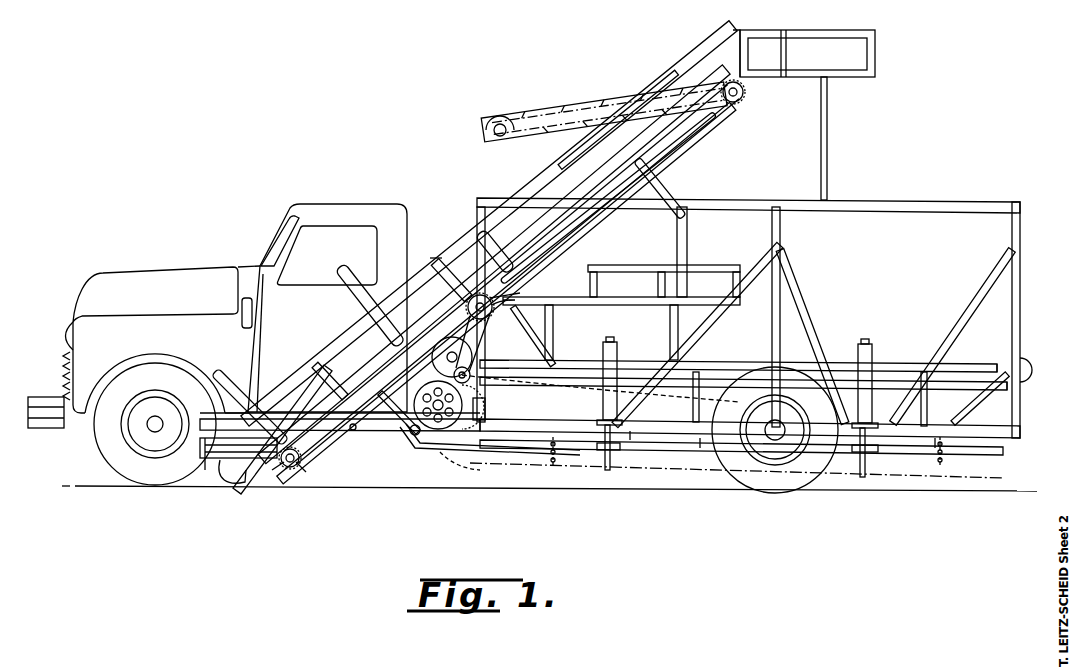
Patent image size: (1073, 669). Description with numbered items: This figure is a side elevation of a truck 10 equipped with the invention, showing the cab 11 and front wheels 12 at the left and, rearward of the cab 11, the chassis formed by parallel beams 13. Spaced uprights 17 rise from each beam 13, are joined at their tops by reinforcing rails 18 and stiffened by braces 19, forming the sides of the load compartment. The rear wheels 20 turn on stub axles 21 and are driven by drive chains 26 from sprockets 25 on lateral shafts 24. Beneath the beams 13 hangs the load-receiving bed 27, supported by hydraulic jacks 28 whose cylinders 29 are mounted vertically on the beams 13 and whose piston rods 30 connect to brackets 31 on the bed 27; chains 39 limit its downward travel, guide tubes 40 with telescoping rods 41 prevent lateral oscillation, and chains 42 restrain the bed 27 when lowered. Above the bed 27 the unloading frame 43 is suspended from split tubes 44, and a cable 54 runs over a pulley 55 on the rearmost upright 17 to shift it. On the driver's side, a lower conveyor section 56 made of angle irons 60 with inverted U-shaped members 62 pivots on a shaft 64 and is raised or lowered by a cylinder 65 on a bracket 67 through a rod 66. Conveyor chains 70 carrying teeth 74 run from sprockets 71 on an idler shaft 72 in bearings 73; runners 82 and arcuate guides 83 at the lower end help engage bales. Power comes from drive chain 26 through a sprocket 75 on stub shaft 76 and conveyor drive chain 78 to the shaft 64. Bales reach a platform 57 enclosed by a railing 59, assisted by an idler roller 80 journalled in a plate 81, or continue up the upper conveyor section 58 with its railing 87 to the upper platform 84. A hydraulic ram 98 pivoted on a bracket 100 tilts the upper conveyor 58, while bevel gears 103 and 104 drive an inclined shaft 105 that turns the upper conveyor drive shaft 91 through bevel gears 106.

The truck 10 is at (252, 253).
The cab 11 is at (304, 323).
The front wheels 12 is at (135, 480).
The parallel beams 13 is at (1010, 436).
The uprights 17 is at (477, 222).
The reinforcing rails 18 is at (932, 207).
The braces 19 is at (710, 337).
The rear wheels 20 is at (775, 482).
The stub axles 21 is at (772, 438).
The lateral shafts 24 is at (413, 436).
The sprockets 25 is at (438, 430).
The drive chains 26 is at (630, 448).
The load-receiving bed 27 is at (995, 456).
The hydraulic jacks 28 is at (618, 346).
The cylinder 29 is at (603, 352).
The piston rod 30 is at (604, 448).
The bracket 31 is at (606, 455).
The chains 39 is at (552, 460).
The tube 40 is at (700, 395).
The rod 41 is at (700, 450).
The chains 42 is at (430, 449).
The unloading frame 43 is at (486, 410).
The split tubes 44 is at (980, 362).
The cable 54 is at (996, 364).
The pulley 55 is at (1030, 366).
The lower conveyor section 56 is at (286, 392).
The platform 57 is at (600, 306).
The upper conveyor section 58 is at (655, 80).
The railing 59 is at (618, 266).
The angle irons 60 is at (350, 388).
The inverted U-shaped members 62 is at (245, 378).
The shaft 64 is at (532, 322).
The cylinder 65 is at (398, 420).
The rod 66 is at (354, 429).
The bracket 67 is at (470, 465).
The conveyor chains 70 is at (323, 446).
The sprockets 71 is at (303, 470).
The idler shaft 72 is at (290, 470).
The bearings 73 is at (278, 468).
The teeth 74 is at (307, 422).
The sprocket 75 is at (450, 352).
The stub shaft 76 is at (500, 386).
The conveyor drive chain 78 is at (480, 347).
The idler roller 80 is at (500, 256).
The plate 81 is at (501, 299).
The runners 82 is at (228, 482).
The arcuate guides 83 is at (198, 466).
The platform 84 is at (855, 78).
The railing 87 is at (543, 184).
The upper conveyor drive shaft 91 is at (748, 80).
The hydraulic ram 98 is at (672, 197).
The bracket 100 is at (687, 230).
The bevel gear 103 is at (460, 258).
The bevel gear 104 is at (546, 294).
The inclined shaft 105 is at (600, 216).
The bevel gears 106 is at (745, 100).